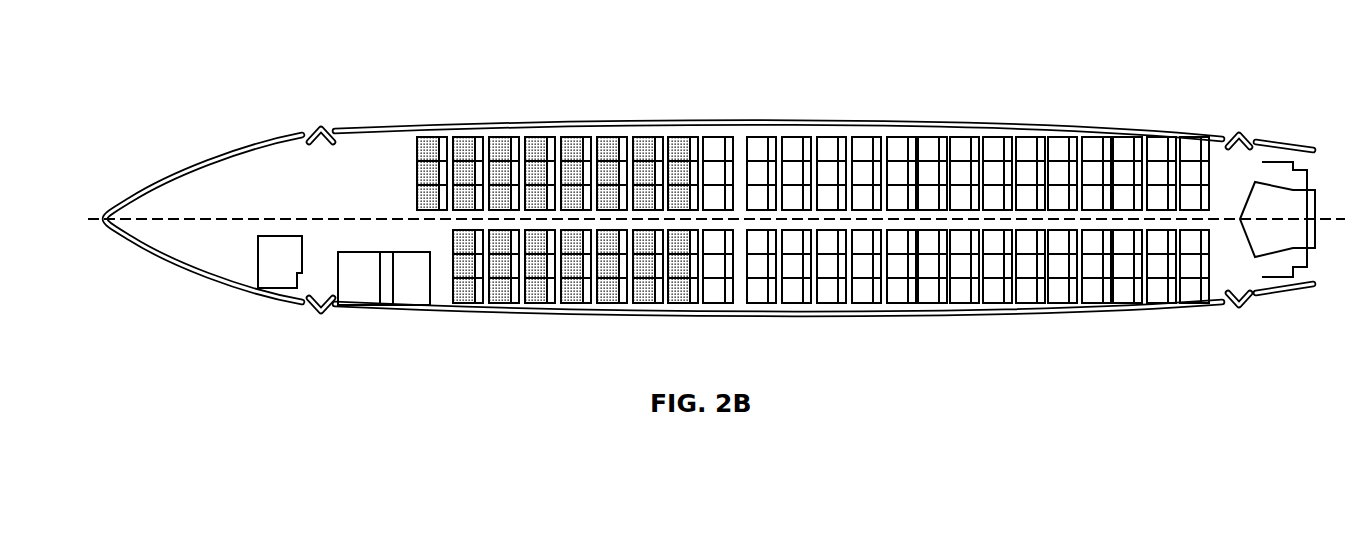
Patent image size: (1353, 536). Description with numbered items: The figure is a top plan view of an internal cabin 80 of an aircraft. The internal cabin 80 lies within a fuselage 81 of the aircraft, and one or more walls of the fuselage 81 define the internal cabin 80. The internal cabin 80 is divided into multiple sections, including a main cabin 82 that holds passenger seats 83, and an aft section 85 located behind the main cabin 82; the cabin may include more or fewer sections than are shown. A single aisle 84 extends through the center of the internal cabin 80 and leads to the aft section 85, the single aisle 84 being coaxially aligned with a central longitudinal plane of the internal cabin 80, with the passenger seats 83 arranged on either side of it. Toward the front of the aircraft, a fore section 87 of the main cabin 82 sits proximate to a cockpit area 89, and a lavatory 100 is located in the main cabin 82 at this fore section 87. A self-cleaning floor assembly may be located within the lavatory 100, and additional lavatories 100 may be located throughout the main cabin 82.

The internal cabin 80 is at (716, 206).
The fuselage 81 is at (524, 128).
The main cabin 82 is at (467, 153).
The passenger seats 83 is at (715, 153).
The single aisle 84 is at (830, 213).
The aft section 85 is at (1226, 157).
The fore section 87 is at (382, 156).
The cockpit area 89 is at (218, 177).
The lavatory 100 is at (385, 278).